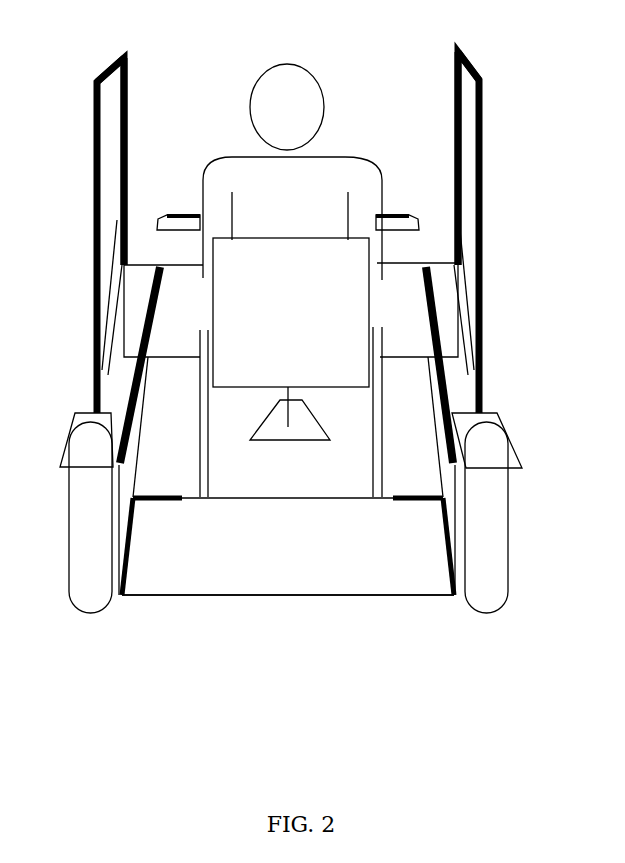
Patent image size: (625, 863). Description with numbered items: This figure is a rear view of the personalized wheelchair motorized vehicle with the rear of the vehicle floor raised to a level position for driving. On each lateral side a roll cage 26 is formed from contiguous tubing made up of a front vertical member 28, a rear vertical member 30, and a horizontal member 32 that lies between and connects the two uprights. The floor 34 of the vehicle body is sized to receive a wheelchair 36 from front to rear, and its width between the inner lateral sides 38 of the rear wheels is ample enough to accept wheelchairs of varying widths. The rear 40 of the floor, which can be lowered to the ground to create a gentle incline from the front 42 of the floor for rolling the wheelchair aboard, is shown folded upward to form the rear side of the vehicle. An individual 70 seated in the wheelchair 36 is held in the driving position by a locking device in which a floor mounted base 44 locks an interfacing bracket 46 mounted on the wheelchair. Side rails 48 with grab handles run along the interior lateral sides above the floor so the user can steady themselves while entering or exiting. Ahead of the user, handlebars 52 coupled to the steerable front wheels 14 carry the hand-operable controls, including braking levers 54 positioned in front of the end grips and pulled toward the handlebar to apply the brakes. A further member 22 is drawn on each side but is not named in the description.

The steerable front wheels 14 is at (92, 592).
The support rod 22 is at (107, 288).
The roll cage 26 is at (84, 75).
The front vertical member 28 is at (128, 82).
The rear vertical member 30 is at (93, 193).
The horizontal member 32 is at (108, 68).
The floor 34 is at (332, 522).
The wheelchair 36 is at (357, 365).
The inner lateral sides of the rear wheels 38 is at (142, 505).
The rear of the floor 40 is at (215, 593).
The front of the floor 42 is at (140, 372).
The floor mounted base 44 is at (272, 432).
The interfacing bracket 46 is at (305, 404).
The side rails 48 is at (120, 396).
The handlebars 52 is at (286, 353).
The braking levers 54 is at (180, 213).
The individual 70 is at (233, 180).